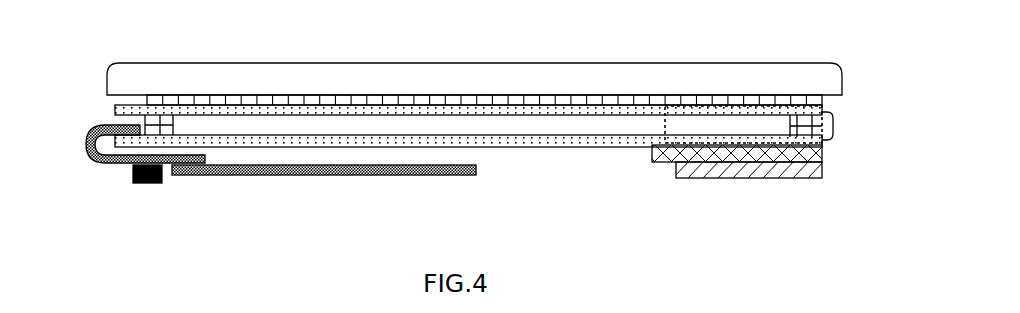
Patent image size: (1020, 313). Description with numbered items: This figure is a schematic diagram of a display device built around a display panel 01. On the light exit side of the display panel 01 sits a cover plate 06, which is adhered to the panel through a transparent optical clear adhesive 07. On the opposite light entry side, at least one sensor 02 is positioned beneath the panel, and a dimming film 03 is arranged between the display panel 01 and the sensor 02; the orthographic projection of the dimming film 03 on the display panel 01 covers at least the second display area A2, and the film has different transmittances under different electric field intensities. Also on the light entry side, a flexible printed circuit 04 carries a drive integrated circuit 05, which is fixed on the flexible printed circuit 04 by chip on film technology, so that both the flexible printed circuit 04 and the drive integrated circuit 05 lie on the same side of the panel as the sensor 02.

The cover plate 06 is at (106, 79).
The transparent optical clear adhesive 07 is at (823, 101).
The display panel 01 is at (834, 126).
The second display area A2 is at (662, 121).
The dimming film 03 is at (824, 153).
The sensor 02 is at (763, 179).
The flexible printed circuit 04 is at (323, 176).
The drive integrated circuit 05 is at (132, 174).